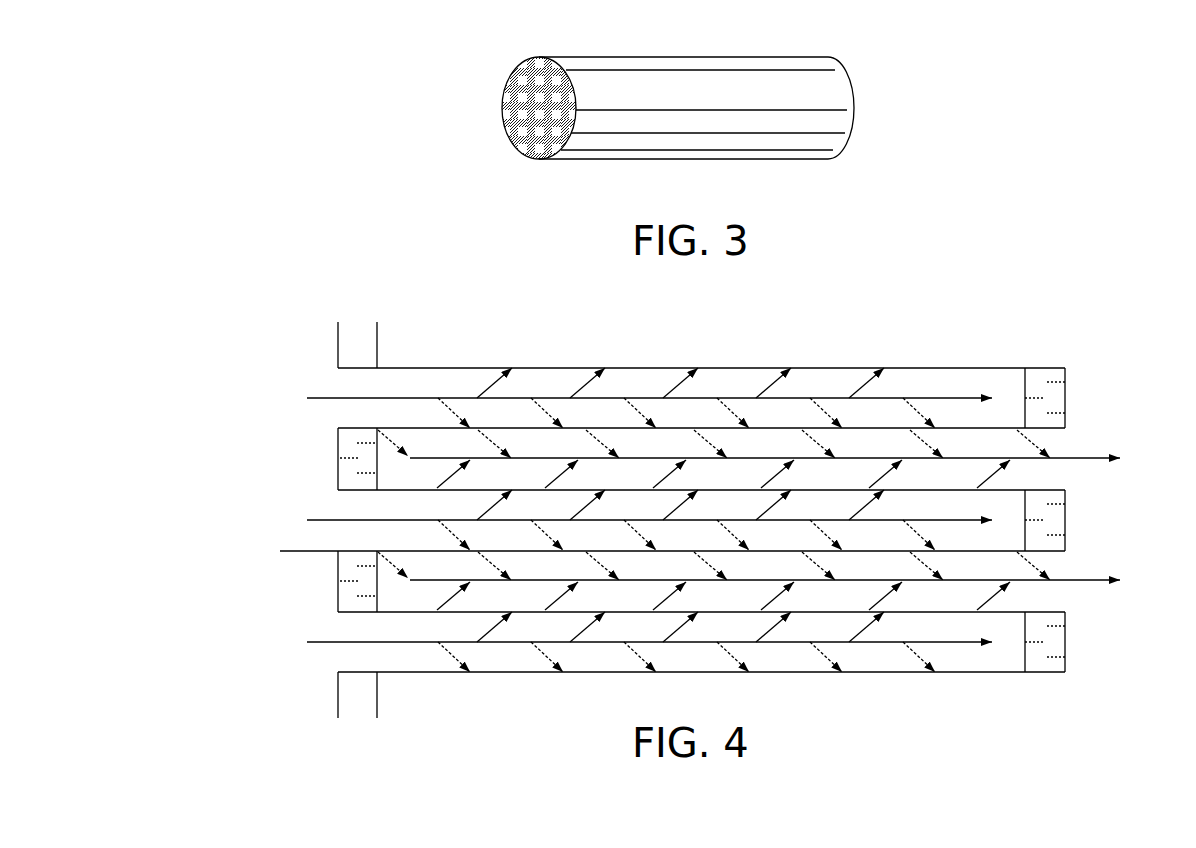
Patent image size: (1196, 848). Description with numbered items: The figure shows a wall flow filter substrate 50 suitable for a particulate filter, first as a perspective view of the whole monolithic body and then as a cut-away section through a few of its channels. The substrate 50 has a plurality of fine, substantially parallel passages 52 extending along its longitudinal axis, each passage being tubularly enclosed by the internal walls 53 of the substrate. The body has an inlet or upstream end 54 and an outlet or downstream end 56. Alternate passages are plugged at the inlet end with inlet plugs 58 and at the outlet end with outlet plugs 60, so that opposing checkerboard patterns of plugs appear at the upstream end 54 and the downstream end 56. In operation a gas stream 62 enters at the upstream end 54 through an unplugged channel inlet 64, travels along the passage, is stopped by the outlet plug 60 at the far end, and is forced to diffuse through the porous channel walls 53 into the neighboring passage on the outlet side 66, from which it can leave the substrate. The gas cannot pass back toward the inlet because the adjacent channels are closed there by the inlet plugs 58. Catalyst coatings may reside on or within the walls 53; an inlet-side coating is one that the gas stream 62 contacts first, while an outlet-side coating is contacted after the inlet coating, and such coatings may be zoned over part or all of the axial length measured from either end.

In FIG. 3, the wall flow filter substrate 50 is at (616, 173).
In FIG. 4, the passages 52 is at (400, 432).
In FIG. 4, the internal walls 53 is at (668, 428).
In FIG. 4, the upstream end 54 is at (313, 318).
In FIG. 4, the downstream end 56 is at (1088, 368).
In FIG. 4, the inlet plugs 58 is at (347, 346).
In FIG. 4, the outlet plugs 60 is at (1057, 398).
In FIG. 4, the gas stream 62 is at (422, 398).
In FIG. 4, the channel inlet 64 is at (368, 393).
In FIG. 4, the outlet side 66 is at (1058, 485).